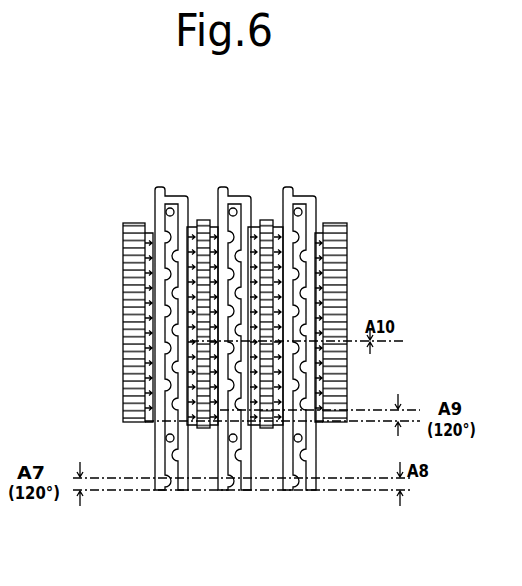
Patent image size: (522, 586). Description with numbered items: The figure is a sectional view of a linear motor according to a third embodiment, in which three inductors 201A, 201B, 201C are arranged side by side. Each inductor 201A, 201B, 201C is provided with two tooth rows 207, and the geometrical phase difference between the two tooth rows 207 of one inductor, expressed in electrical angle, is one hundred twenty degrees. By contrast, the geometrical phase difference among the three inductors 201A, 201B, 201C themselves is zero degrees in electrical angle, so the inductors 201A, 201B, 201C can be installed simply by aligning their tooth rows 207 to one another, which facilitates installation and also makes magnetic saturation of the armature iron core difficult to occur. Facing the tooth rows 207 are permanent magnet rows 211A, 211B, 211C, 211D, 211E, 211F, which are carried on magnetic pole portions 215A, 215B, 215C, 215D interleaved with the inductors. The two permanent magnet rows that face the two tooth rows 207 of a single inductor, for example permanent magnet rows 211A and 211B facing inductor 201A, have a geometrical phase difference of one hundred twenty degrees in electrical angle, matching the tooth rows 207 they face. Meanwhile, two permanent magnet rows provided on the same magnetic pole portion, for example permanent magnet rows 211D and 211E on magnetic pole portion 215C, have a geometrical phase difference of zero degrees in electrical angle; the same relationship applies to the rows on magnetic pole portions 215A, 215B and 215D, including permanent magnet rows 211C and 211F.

The inductor 201A is at (172, 200).
The inductor 201B is at (236, 200).
The inductor 201C is at (300, 200).
The tooth row 207 is at (233, 331).
The magnetic pole portion 215A is at (126, 222).
The magnetic pole portion 215B is at (203, 220).
The magnetic pole portion 215C is at (268, 220).
The magnetic pole portion 215D is at (348, 225).
The permanent magnet row 211A is at (150, 424).
The permanent magnet row 211B is at (192, 427).
The permanent magnet row 211C is at (216, 427).
The permanent magnet row 211D is at (255, 427).
The permanent magnet row 211E is at (280, 427).
The permanent magnet row 211F is at (318, 425).